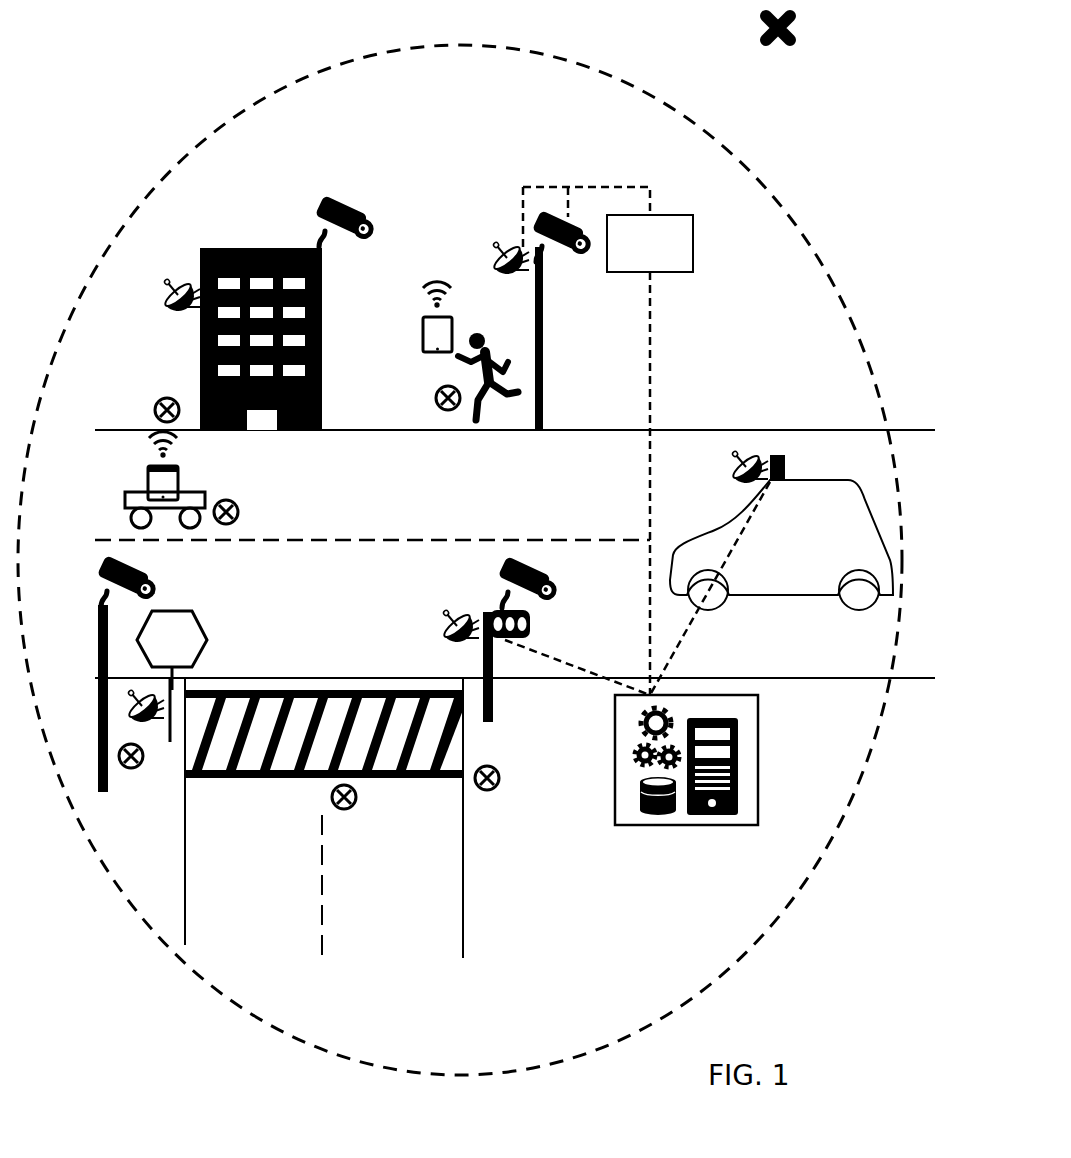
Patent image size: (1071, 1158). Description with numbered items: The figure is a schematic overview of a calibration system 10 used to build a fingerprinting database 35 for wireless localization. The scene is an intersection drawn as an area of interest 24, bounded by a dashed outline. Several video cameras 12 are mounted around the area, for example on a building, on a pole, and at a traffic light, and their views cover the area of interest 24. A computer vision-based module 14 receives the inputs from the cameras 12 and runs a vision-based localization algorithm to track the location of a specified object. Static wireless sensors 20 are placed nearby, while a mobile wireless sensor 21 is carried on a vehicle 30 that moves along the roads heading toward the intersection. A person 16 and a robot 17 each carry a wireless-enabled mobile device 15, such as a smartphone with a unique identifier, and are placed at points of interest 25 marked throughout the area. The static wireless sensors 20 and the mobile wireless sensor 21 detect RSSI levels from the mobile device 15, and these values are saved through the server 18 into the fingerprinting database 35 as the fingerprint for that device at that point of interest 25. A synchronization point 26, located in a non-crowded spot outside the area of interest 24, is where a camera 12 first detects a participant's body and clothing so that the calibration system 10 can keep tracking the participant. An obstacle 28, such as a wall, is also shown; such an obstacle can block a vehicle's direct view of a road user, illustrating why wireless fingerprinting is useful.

The calibration system 10 is at (730, 359).
The video camera 12 is at (523, 220).
The computer vision-based module 14 is at (650, 243).
The wireless-enabled mobile device 15 is at (418, 326).
The person 16 is at (488, 350).
The robot 17 is at (212, 492).
The server 18 is at (742, 742).
The static wireless sensor 20 is at (498, 256).
The mobile wireless sensor 21 is at (731, 452).
The area of interest 24 is at (232, 106).
The point of interest 25 is at (158, 402).
The synchronization point 26 is at (778, 52).
The obstacle 28 is at (546, 331).
The vehicle 30 is at (781, 545).
The fingerprinting database 35 is at (642, 813).